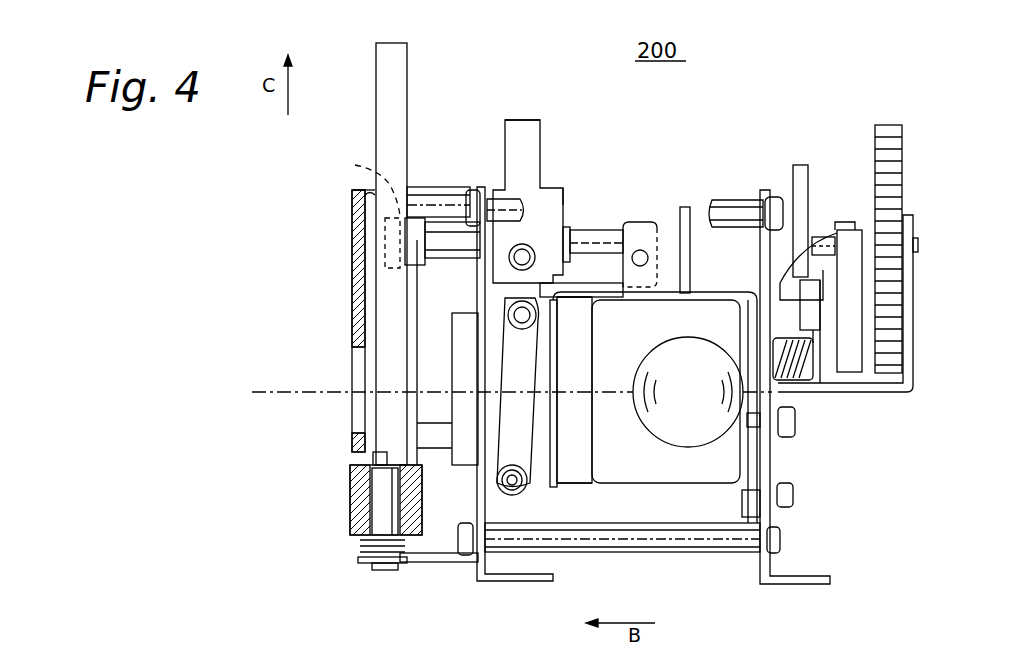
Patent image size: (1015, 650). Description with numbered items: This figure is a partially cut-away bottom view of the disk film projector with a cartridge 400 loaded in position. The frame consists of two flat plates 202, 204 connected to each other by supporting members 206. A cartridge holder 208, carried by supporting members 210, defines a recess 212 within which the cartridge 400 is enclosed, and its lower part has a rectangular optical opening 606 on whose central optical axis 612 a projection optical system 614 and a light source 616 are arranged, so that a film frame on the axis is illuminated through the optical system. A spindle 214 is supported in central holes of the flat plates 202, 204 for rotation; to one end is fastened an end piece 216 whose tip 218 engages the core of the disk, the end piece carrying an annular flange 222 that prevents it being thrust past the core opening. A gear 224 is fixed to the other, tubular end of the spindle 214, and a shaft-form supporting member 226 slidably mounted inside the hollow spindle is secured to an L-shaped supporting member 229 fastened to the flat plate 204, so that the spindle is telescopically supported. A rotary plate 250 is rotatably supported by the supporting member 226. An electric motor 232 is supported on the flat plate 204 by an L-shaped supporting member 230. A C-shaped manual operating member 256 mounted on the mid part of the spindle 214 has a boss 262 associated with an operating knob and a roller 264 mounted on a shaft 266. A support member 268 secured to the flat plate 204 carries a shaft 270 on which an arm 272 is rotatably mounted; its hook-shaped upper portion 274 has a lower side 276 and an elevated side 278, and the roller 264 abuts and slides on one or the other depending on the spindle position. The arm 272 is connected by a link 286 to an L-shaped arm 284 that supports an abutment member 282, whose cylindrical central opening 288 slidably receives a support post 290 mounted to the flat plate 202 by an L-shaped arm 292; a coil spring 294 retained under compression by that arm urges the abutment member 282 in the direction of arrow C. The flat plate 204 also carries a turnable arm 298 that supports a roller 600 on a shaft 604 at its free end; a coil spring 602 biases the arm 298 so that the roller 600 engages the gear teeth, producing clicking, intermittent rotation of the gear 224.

The flat plate 202 is at (478, 582).
The flat plate 204 is at (760, 580).
The supporting members 206 is at (490, 197).
The cartridge holder 208 is at (350, 238).
The supporting members 210 is at (433, 188).
The recess 212 is at (352, 300).
The spindle 214 is at (615, 231).
The end piece 216 is at (405, 276).
The tip 218 is at (362, 222).
The annular flange 222 is at (354, 208).
The gear 224 is at (800, 165).
The supporting member 226 is at (820, 237).
The L-shaped supporting member 229 is at (892, 394).
The L-shaped supporting member 230 is at (690, 292).
The electric motor 232 is at (620, 484).
The rotary plate 250 is at (903, 136).
The manual operating member 256 is at (548, 186).
The boss 262 is at (531, 119).
The roller 264 is at (532, 250).
The shaft 266 is at (572, 192).
The support member 268 is at (714, 200).
The shaft 270 is at (646, 250).
The arm 272 is at (594, 330).
The upper portion 274 is at (595, 226).
The lower side 276 is at (612, 312).
The elevated side 278 is at (540, 284).
The abutment member 282 is at (350, 498).
The L-shaped arm 284 is at (405, 565).
The link 286 is at (545, 432).
The cylindrical central opening 288 is at (385, 462).
The support post 290 is at (385, 512).
The L-shaped arm 292 is at (444, 563).
The coil spring 294 is at (368, 554).
The arm 298 is at (850, 312).
The cartridge 400 is at (397, 48).
The roller 600 is at (865, 236).
The coil spring 602 is at (800, 385).
The shaft 604 is at (850, 226).
The optical opening 606 is at (356, 372).
The optical axis 612 is at (262, 394).
The projection optical system 614 is at (452, 362).
The light source 616 is at (648, 440).